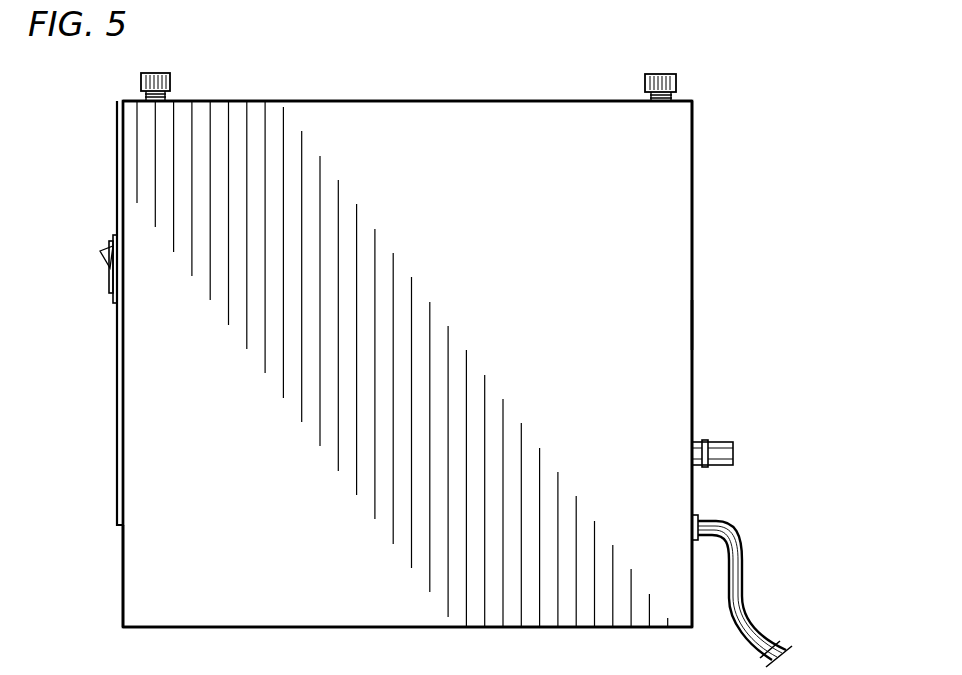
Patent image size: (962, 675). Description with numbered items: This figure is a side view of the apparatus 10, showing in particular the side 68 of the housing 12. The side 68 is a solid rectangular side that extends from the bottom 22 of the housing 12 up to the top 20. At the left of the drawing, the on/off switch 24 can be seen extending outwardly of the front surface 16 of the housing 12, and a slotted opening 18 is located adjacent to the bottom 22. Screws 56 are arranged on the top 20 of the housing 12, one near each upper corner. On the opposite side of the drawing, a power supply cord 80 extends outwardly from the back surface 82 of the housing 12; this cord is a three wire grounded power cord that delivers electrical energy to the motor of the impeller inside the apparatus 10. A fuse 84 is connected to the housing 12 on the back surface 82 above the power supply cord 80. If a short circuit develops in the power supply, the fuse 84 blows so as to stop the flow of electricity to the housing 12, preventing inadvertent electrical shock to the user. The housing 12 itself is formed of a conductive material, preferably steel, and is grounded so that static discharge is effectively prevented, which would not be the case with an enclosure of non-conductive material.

The apparatus 10 is at (712, 167).
The housing 12 is at (692, 390).
The front surface 16 is at (117, 442).
The slotted opening 18 is at (120, 578).
The top 20 is at (470, 100).
The bottom 22 is at (387, 630).
The on/off switch 24 is at (100, 251).
The screws 56 is at (190, 75).
The side 68 is at (662, 270).
The power supply cord 80 is at (745, 585).
The back surface 82 is at (692, 328).
The fuse 84 is at (735, 455).